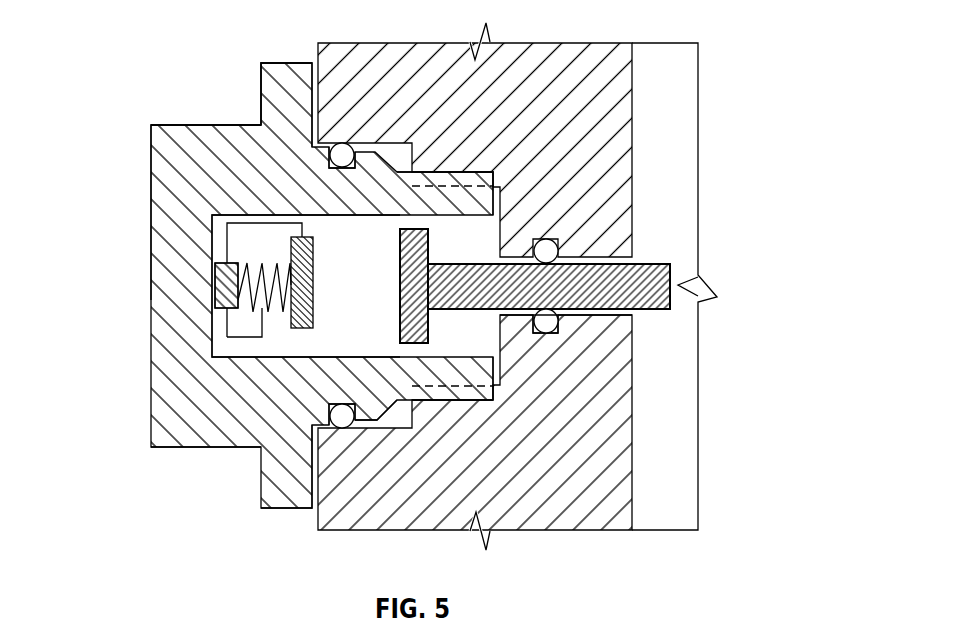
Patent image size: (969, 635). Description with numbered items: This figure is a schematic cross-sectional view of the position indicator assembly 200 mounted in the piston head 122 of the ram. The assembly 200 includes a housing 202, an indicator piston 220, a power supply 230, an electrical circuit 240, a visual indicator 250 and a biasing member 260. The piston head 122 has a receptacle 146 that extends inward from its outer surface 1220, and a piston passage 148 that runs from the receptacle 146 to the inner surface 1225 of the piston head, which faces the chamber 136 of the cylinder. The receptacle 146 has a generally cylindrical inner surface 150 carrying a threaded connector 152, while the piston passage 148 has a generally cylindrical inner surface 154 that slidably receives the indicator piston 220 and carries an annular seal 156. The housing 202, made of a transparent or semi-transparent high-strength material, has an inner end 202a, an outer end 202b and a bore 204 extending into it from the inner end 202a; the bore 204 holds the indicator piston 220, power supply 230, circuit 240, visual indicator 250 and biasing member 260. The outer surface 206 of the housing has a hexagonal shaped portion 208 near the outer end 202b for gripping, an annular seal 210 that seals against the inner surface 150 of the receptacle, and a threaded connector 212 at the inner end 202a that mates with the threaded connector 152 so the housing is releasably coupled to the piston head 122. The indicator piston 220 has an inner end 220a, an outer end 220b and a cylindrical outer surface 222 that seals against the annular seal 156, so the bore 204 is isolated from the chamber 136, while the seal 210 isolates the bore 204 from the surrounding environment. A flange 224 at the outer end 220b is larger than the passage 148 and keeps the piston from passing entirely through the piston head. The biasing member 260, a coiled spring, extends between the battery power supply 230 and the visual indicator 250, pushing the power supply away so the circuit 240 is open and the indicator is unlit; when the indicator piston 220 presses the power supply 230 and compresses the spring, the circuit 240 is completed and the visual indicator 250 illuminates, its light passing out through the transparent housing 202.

The position indicator assembly 200 is at (133, 48).
The housing 202 is at (140, 413).
The inner end 202a is at (498, 178).
The outer end 202b is at (148, 147).
The bore 204 is at (343, 227).
The outer surface 206 is at (282, 63).
The hexagonal shaped portion 208 is at (173, 460).
The outer surface of piston head 1220 is at (313, 512).
The electrical connector or circuit 240 is at (298, 232).
The biasing member 260 is at (257, 245).
The visual indicator 250 is at (215, 282).
The power supply 230 is at (313, 297).
The indicator piston 220 is at (612, 255).
The inner end 220a is at (678, 278).
The outer end 220b is at (410, 300).
The outer surface 222 is at (651, 270).
The flange 224 is at (407, 325).
The chamber 136 is at (678, 135).
The piston head 122 is at (612, 420).
The inner surface of piston head 1225 is at (632, 513).
The annular seal 210 is at (340, 148).
The inner surface 150 is at (334, 432).
The piston passage 148 is at (568, 313).
The annular seal 156 is at (543, 337).
The inner surface 154 is at (618, 318).
The threaded connector 152 is at (497, 393).
The threaded connector 212 is at (433, 401).
The receptacle 146 is at (391, 424).